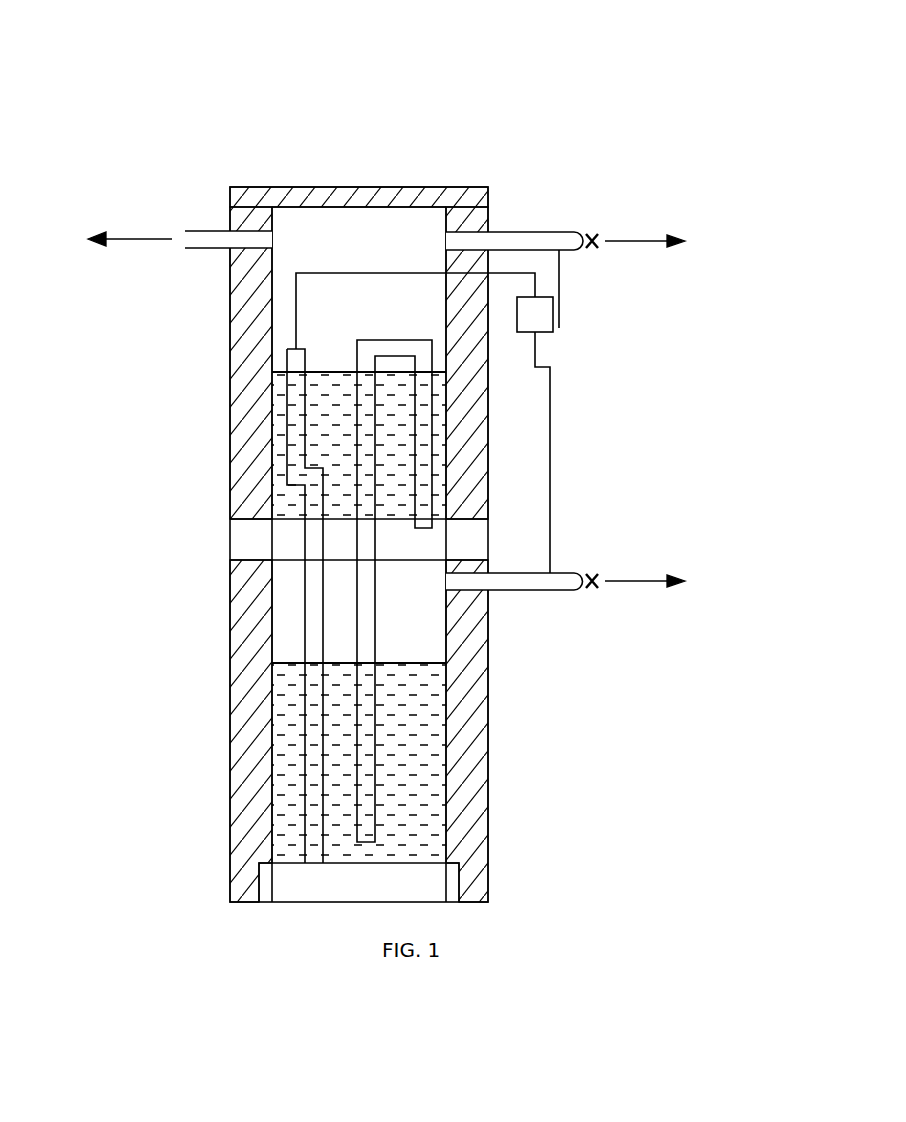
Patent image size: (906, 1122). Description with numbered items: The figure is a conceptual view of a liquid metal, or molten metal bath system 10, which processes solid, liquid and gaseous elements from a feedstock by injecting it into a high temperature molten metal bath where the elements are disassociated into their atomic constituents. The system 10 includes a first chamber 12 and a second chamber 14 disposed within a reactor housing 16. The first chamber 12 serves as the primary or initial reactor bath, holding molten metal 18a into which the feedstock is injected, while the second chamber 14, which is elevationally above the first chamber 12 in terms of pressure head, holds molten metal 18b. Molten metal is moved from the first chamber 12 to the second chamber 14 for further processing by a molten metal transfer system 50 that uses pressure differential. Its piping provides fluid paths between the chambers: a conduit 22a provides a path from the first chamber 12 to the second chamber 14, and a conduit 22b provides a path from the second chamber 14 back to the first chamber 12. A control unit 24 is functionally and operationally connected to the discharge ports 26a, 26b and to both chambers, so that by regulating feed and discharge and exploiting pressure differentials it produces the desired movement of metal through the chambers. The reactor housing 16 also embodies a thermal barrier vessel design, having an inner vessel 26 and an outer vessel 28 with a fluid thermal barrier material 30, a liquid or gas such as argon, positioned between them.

The molten metal bath system 10 is at (566, 96).
The first chamber 12 is at (190, 643).
The second chamber 14 is at (182, 411).
The reactor housing 16 is at (232, 150).
The molten metal 18a is at (435, 718).
The molten metal 18b is at (435, 485).
The conduit 22a is at (425, 352).
The conduit 22b is at (305, 533).
The control unit 24 is at (557, 308).
The inner vessel 26 is at (270, 287).
The discharge port 26a is at (567, 232).
The discharge port 26b is at (560, 573).
The outer vessel 28 is at (307, 187).
The thermal barrier material 30 is at (480, 772).
The molten metal transfer system 50 is at (686, 335).